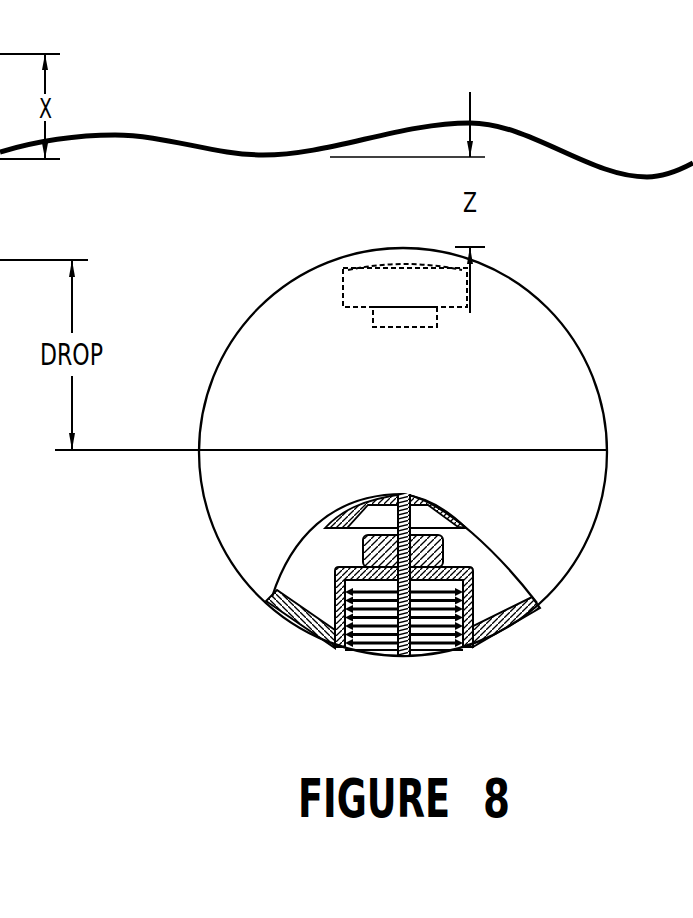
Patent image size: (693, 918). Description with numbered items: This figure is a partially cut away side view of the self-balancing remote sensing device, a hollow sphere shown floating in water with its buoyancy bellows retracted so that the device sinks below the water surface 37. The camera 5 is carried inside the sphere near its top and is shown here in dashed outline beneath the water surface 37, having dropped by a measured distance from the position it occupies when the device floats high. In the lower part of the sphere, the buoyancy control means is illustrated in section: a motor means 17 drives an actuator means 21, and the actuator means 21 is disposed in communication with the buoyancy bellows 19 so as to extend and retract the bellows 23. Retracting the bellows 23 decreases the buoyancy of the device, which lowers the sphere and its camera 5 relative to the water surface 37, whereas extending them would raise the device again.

The water surface 37 is at (573, 157).
The camera 5 is at (360, 282).
The motor means 17 is at (365, 552).
The actuator means 21 is at (412, 591).
The bellows 23 is at (373, 628).
The buoyancy bellows 19 is at (425, 655).